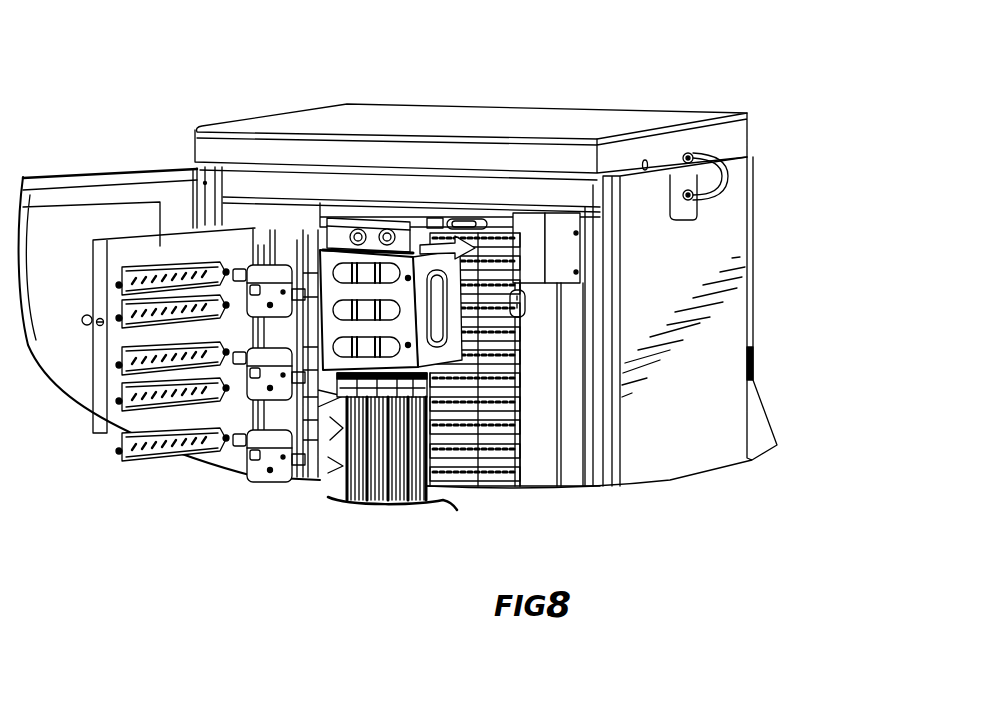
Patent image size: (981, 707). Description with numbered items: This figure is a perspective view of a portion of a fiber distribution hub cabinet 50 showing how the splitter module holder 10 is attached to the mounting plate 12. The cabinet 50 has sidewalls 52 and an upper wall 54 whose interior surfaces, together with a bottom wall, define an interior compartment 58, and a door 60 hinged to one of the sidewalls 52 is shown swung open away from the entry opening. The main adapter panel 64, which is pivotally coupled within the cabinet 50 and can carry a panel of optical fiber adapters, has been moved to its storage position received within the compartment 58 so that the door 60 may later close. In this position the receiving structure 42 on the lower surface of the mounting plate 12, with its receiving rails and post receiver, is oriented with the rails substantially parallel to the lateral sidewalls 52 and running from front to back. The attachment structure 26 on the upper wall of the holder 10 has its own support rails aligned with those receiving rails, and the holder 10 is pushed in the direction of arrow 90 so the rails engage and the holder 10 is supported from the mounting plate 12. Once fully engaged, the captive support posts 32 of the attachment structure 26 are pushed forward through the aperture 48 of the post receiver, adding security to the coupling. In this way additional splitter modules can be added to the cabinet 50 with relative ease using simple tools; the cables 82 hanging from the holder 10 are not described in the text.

The splitter module holder 10 is at (330, 403).
The mounting plate 12 is at (503, 213).
The attachment structure 26 is at (347, 212).
The captive support posts 32 is at (387, 230).
The receiving structure 42 is at (471, 203).
The aperture 48 is at (477, 220).
The fiber distribution hub cabinet 50 is at (770, 68).
The sidewalls 52 is at (735, 297).
The upper wall 54 is at (668, 112).
The interior compartment 58 is at (497, 460).
The door 60 is at (72, 203).
The main adapter panel 64 is at (580, 447).
The cables 82 is at (353, 505).
The arrow 90 is at (443, 260).